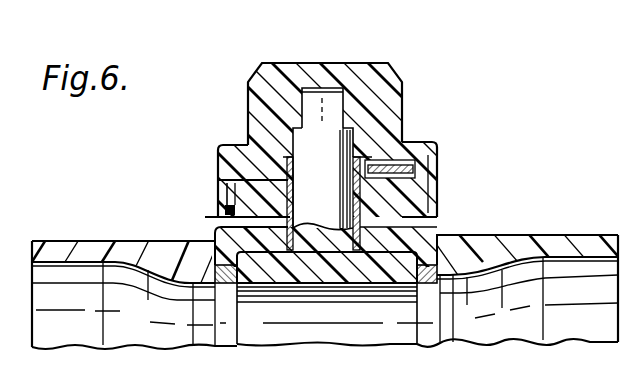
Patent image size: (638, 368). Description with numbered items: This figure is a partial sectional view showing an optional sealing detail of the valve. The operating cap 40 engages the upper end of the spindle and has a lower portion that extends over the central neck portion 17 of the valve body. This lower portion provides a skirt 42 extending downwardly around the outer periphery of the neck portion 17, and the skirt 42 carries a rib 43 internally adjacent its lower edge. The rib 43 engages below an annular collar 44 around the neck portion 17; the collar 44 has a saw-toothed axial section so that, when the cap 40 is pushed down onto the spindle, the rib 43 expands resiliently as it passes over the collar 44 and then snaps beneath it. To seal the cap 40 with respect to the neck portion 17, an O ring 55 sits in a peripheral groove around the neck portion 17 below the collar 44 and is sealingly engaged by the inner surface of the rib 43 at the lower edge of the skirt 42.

The operating cap 40 is at (377, 72).
The skirt 42 is at (218, 180).
The rib 43 is at (225, 213).
The annular collar 44 is at (420, 187).
The O ring 55 is at (228, 210).
The neck portion 17 is at (403, 211).